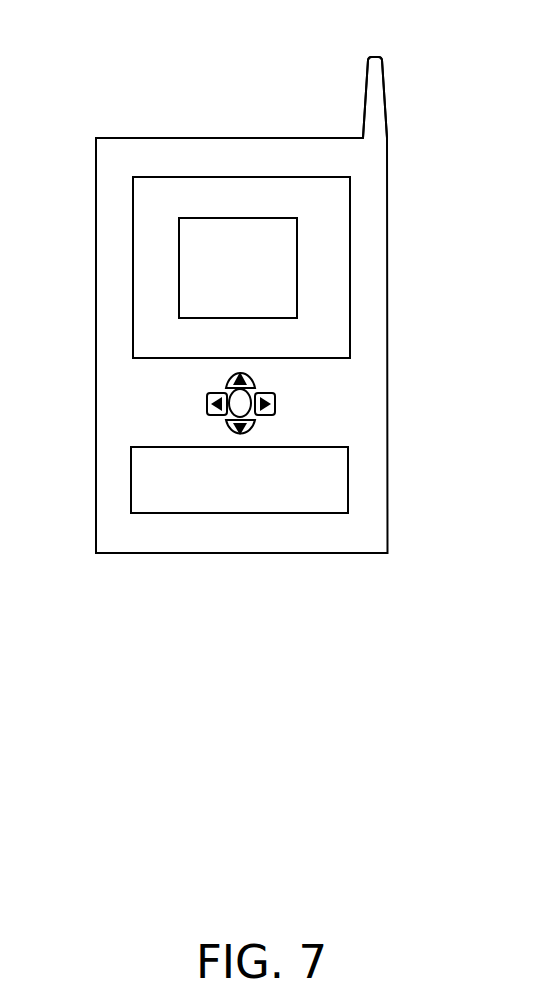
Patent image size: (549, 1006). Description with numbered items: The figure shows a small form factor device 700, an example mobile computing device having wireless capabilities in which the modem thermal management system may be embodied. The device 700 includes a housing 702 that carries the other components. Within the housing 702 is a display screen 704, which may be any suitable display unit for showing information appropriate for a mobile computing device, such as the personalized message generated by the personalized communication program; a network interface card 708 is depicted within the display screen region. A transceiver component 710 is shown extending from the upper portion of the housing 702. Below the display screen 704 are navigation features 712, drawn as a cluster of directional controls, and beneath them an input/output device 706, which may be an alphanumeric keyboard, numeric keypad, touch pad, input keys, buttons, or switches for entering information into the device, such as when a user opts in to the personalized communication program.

The small form factor device 700 is at (107, 72).
The housing 702 is at (396, 345).
The display screen 704 is at (355, 196).
The input/output (I/O) device 706 is at (360, 482).
The network interface card (NIC) 708 is at (306, 283).
The transceiver component 710 is at (360, 94).
The navigation features 712 is at (281, 402).